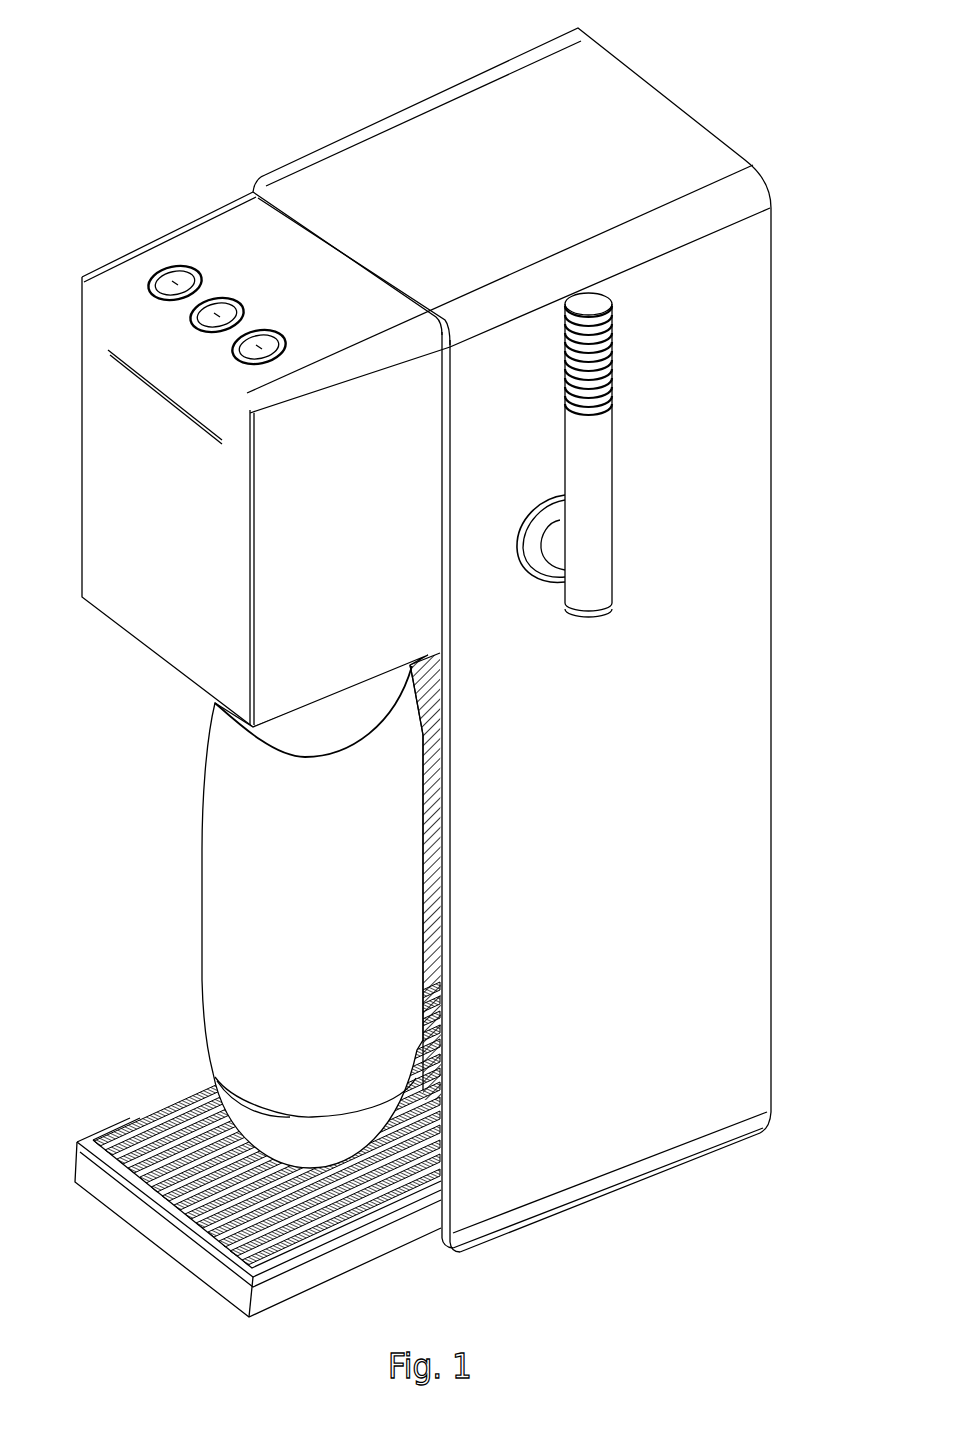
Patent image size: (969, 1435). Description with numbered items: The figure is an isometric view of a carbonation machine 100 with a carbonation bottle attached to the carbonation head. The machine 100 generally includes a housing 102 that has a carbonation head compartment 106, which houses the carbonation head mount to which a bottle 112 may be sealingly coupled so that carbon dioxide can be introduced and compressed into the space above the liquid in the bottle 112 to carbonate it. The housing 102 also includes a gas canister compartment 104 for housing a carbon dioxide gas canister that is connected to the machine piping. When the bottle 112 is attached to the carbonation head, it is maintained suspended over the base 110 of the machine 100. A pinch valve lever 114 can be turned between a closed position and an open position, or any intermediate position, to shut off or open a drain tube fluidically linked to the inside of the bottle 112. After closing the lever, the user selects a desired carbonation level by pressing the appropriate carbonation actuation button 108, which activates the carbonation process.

The carbonation machine 100 is at (214, 104).
The housing 102 is at (657, 93).
The gas canister compartment 104 is at (772, 678).
The carbonation head compartment 106 is at (237, 204).
The carbonation actuation button 108 is at (182, 268).
The base 110 is at (157, 1107).
The bottle 112 is at (200, 873).
The pinch valve lever 114 is at (612, 453).